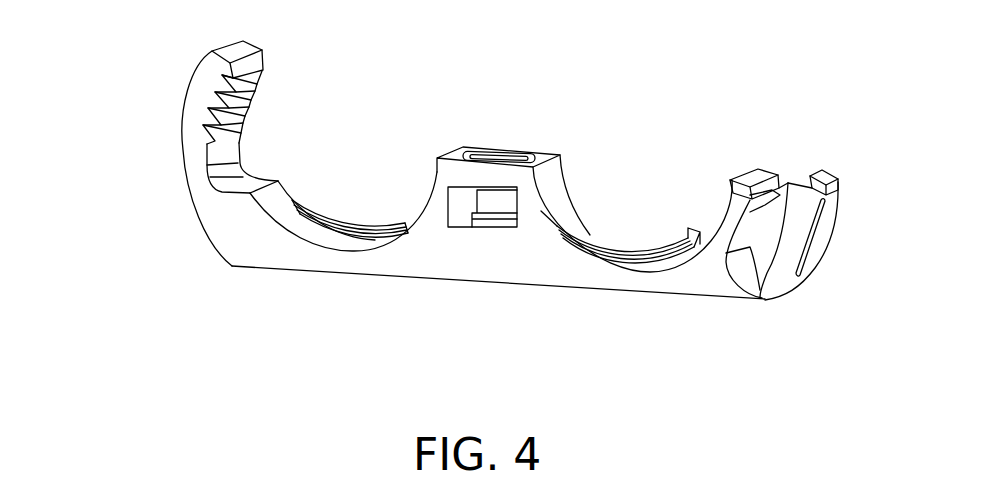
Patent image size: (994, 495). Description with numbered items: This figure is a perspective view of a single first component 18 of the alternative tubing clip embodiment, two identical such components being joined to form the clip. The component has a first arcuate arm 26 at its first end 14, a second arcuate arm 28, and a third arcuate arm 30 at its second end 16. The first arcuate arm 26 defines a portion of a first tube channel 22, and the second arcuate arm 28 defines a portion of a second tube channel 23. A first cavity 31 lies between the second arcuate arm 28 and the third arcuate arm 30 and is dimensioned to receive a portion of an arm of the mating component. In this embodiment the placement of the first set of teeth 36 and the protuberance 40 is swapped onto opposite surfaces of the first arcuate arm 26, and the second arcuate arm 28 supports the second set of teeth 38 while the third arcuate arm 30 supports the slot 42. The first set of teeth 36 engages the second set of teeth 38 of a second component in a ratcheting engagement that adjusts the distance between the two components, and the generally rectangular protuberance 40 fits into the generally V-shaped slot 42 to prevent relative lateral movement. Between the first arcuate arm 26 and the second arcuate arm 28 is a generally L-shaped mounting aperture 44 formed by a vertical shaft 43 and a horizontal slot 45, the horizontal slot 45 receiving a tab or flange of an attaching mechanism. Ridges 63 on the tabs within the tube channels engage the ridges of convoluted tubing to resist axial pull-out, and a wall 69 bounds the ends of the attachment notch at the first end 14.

The first end 14 is at (98, 138).
The second end 16 is at (858, 230).
The first component 18 is at (92, 173).
The first tube channel 22 is at (403, 212).
The second tube channel 23 is at (643, 188).
The first arcuate arm 26 is at (195, 178).
The second arcuate arm 28 is at (756, 170).
The third arcuate arm 30 is at (831, 178).
The first cavity 31 is at (753, 258).
The first set of teeth 36 is at (260, 80).
The second set of teeth 38 is at (784, 172).
The protuberance 40 is at (187, 105).
The slot 42 is at (822, 212).
The vertical shaft 43 is at (483, 157).
The mounting aperture 44 is at (520, 148).
The horizontal slot 45 is at (495, 211).
The ridges 63 is at (340, 248).
The wall 69 is at (320, 195).